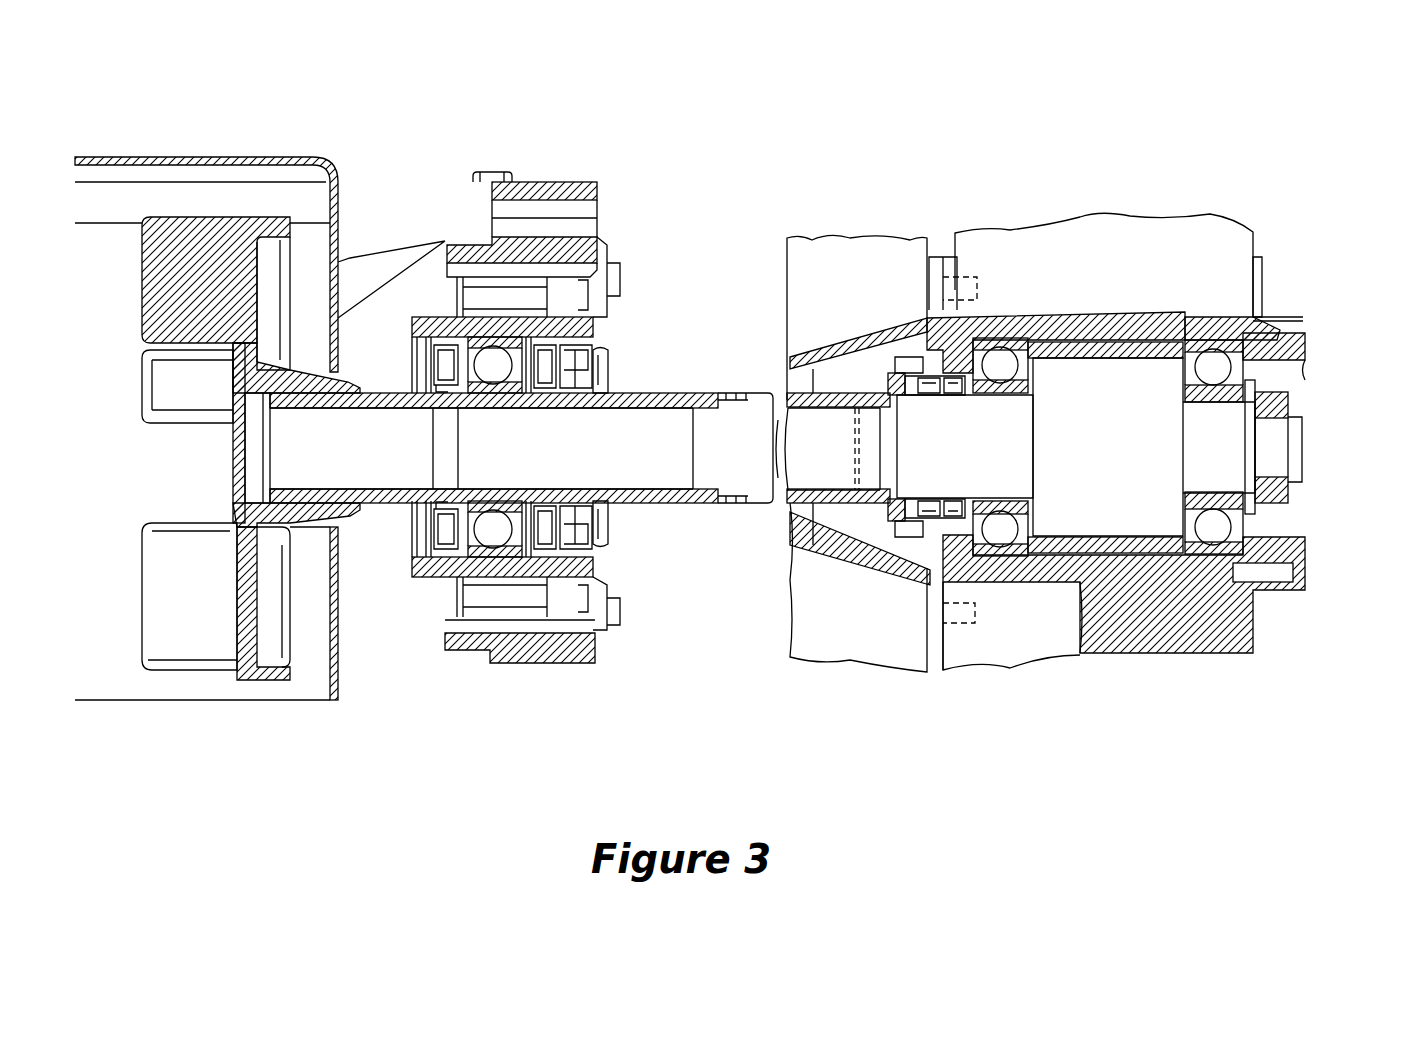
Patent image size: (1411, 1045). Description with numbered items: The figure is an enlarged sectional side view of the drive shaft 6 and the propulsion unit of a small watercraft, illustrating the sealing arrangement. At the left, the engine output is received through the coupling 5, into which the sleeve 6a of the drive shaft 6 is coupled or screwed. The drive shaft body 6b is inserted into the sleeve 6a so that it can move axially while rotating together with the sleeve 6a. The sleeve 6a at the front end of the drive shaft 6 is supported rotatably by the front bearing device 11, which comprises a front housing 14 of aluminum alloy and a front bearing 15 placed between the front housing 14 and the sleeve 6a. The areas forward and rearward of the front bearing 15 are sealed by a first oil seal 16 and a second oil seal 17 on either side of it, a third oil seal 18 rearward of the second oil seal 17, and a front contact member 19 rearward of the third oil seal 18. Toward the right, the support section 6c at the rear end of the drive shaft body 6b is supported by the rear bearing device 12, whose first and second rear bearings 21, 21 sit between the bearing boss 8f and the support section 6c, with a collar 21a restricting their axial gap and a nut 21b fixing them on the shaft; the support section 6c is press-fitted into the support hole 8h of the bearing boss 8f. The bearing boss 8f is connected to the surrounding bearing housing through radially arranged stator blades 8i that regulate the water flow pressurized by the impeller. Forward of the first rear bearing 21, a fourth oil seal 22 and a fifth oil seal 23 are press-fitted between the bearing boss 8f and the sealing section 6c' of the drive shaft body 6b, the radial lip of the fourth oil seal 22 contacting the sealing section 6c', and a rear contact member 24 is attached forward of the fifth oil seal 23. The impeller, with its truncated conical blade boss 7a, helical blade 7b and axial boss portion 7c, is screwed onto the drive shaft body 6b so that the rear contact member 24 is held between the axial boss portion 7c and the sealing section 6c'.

The coupling 5 is at (197, 215).
The drive shaft 6 is at (509, 362).
The sleeve 6a is at (655, 395).
The drive shaft body 6b is at (712, 432).
The support section 6c is at (1144, 447).
The sealing section 6c' is at (956, 446).
The blade boss 7a is at (830, 348).
The helical blade 7b is at (815, 248).
The axial boss portion 7c is at (830, 408).
The bearing boss 8f is at (1093, 312).
The support hole 8h is at (1070, 340).
The stator blades 8i is at (1100, 215).
The front bearing device 11 is at (557, 300).
The rear bearing device 12 is at (1130, 326).
The front housing 14 is at (537, 182).
The front bearing 15 is at (495, 337).
The first oil seal 16 is at (437, 323).
The second oil seal 17 is at (547, 325).
The third oil seal 18 is at (588, 333).
The front contact member 19 is at (607, 385).
The rear bearings 21 is at (1000, 340).
The collar 21a is at (1155, 350).
The nut 21b is at (1290, 395).
The fourth oil seal 22 is at (955, 373).
The fifth oil seal 23 is at (927, 385).
The rear contact member 24 is at (880, 385).